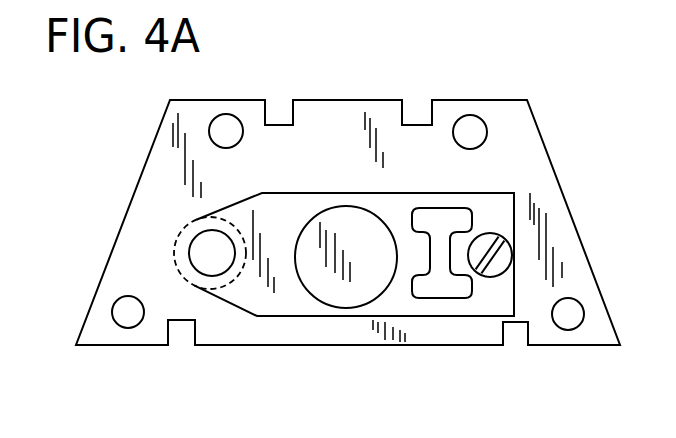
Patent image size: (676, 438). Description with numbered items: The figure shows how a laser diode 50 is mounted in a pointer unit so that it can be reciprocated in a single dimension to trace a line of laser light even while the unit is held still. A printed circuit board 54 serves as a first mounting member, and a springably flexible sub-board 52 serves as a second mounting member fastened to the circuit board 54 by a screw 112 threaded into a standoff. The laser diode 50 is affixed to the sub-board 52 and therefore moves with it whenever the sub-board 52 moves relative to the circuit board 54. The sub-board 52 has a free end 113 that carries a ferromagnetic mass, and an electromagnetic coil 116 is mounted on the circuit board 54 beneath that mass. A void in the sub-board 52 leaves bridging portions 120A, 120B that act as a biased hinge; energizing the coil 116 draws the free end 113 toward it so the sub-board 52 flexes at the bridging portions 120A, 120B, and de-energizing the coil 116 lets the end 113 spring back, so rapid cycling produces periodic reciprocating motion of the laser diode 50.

The laser diode 50 is at (337, 205).
The printed circuit board 54 is at (508, 122).
The sub-board 52 is at (503, 208).
The screw 112 is at (508, 253).
The free end 113 is at (172, 263).
The electromagnetic coil 116 is at (208, 245).
The bridging portion 120A is at (443, 197).
The bridging portion 120B is at (438, 304).